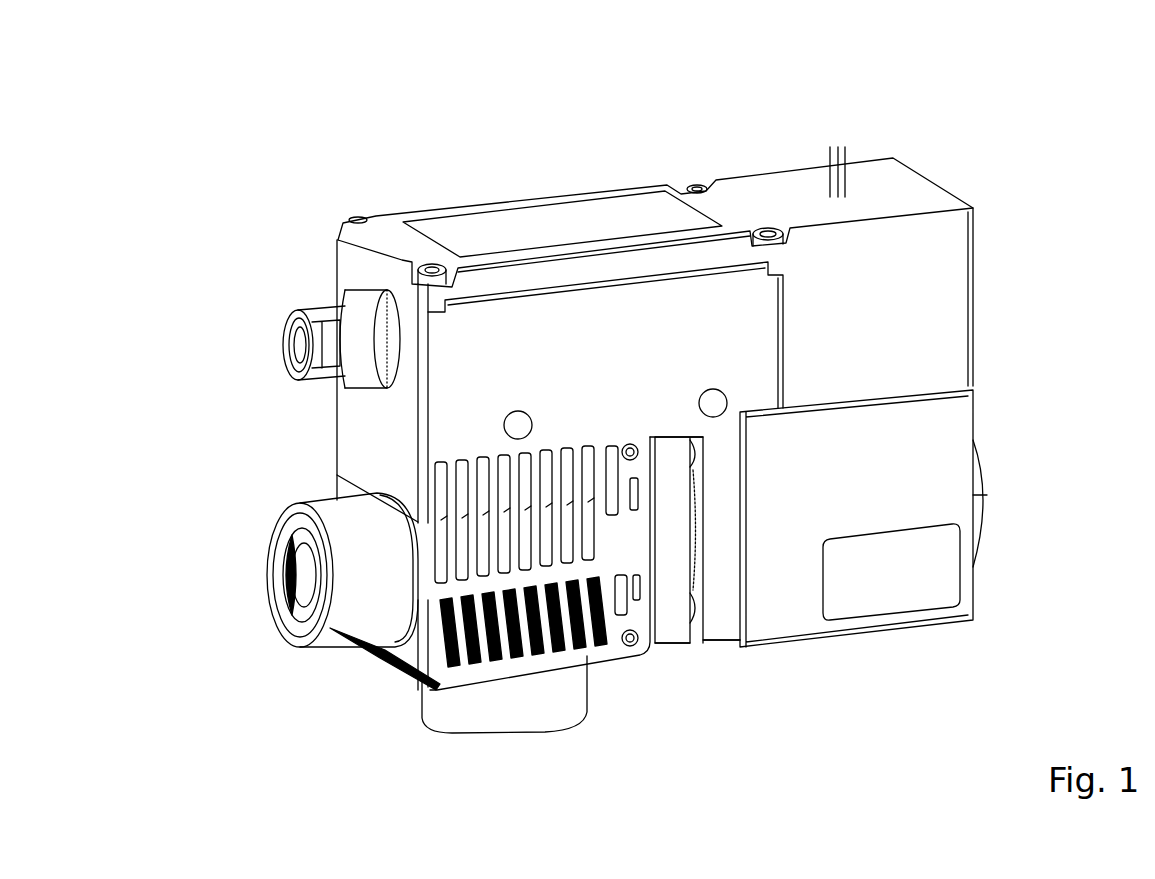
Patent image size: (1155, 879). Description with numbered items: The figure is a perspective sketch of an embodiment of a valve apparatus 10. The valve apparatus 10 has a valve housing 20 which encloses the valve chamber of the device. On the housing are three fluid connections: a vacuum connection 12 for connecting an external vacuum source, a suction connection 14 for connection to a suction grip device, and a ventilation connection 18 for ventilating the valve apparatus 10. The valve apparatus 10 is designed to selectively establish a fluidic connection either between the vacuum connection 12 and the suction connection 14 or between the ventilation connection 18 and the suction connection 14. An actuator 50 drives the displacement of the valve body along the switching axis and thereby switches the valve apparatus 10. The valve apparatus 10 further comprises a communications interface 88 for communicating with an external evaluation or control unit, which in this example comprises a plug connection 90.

The valve apparatus 10 is at (630, 112).
The vacuum connection 12 is at (300, 588).
The suction connection 14 is at (500, 734).
The ventilation connection 18 is at (691, 632).
The valve housing 20 is at (362, 456).
The actuator 50 is at (880, 640).
The communications interface 88 is at (290, 339).
The plug connection 90 is at (300, 348).